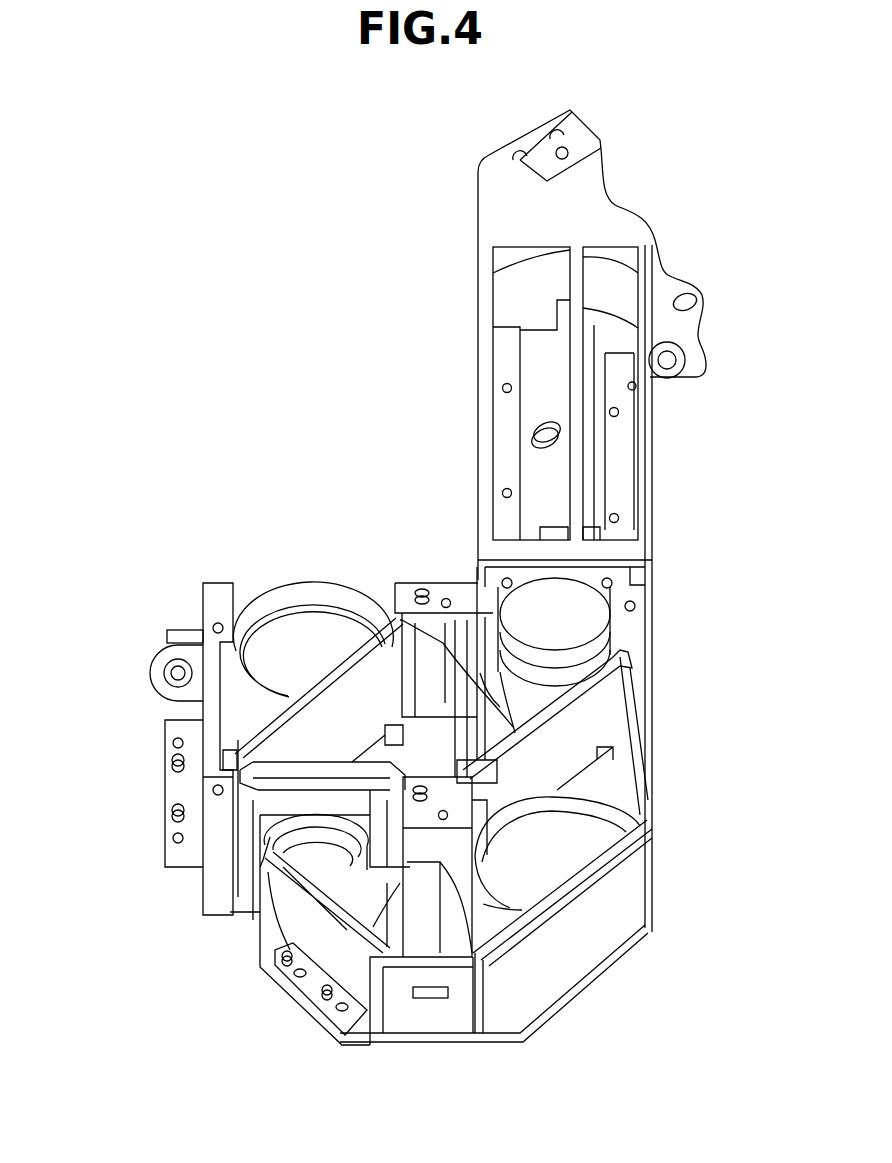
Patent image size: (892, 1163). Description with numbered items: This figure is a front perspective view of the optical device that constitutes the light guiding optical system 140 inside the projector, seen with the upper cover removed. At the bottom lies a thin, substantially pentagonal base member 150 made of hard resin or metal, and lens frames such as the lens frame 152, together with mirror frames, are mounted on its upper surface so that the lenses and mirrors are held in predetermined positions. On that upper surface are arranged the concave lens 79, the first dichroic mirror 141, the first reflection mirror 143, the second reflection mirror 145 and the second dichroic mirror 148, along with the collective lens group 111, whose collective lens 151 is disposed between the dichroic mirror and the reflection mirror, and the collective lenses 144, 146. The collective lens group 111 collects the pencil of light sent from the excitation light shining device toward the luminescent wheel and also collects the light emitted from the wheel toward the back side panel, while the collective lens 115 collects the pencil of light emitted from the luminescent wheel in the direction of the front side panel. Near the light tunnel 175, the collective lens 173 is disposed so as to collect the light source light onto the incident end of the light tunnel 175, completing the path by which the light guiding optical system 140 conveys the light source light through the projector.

The light guiding optical system 140 is at (240, 555).
The concave lens 79 is at (309, 643).
The first dichroic mirror 141 is at (322, 720).
The light tunnel 175 is at (560, 487).
The collective lens 173 is at (580, 622).
The second dichroic mirror 148 is at (587, 723).
The collective lens 146 is at (563, 852).
The second reflection mirror 145 is at (583, 937).
The collective lens 144 is at (423, 940).
The first reflection mirror 143 is at (325, 940).
The base member 150 is at (243, 964).
The collective lens 115 is at (275, 928).
The collective lens 151 is at (262, 886).
The collective lens group 111 is at (257, 815).
The lens frame 152 is at (267, 800).